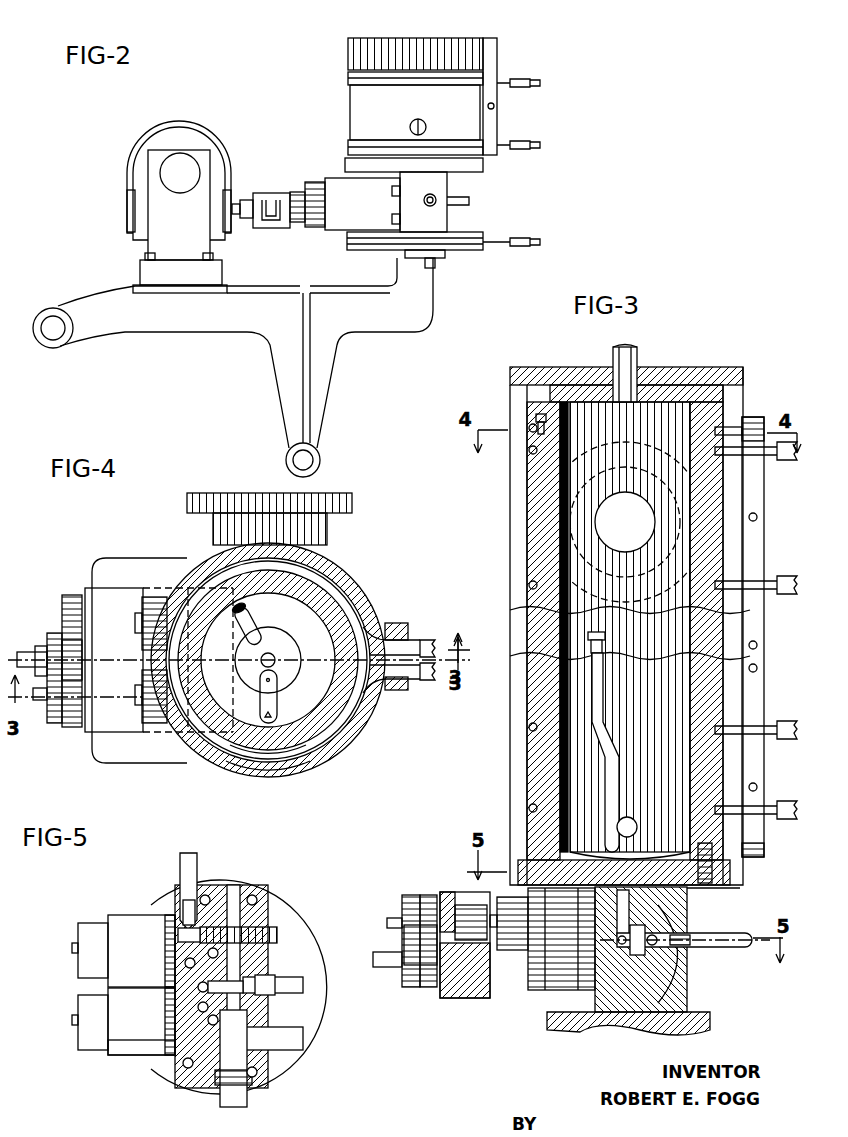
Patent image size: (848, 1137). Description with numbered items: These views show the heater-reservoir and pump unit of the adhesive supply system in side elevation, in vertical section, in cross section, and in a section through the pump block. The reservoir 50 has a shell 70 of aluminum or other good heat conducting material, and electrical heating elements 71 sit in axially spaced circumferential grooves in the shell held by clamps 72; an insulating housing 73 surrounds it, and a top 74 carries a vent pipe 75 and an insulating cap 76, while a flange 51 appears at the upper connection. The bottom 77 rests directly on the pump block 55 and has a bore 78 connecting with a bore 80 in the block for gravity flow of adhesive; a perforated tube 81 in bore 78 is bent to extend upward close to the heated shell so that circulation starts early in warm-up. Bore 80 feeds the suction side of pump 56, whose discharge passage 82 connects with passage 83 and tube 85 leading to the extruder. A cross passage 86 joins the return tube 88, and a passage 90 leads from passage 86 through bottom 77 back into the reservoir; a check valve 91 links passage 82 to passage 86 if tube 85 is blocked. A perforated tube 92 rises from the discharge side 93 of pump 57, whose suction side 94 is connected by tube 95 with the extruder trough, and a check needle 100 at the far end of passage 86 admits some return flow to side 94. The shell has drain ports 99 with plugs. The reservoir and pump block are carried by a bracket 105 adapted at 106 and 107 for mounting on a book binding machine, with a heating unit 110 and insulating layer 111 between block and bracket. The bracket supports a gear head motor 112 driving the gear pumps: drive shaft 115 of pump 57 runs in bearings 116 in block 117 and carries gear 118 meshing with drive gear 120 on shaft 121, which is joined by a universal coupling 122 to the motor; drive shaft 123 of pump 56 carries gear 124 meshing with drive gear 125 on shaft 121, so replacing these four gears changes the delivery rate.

In FIG. 2, the reservoir 50 is at (413, 98).
In FIG. 3, the reservoir 50 is at (622, 601).
In FIG. 4, the reservoir 50 is at (301, 678).
In FIG. 4, the flange 51 is at (250, 520).
In FIG. 2, the pump block 55 is at (447, 191).
In FIG. 3, the pump block 55 is at (688, 992).
In FIG. 4, the pump block 55 is at (291, 780).
In FIG. 4, the pump 56 is at (152, 597).
In FIG. 5, the pump 56 is at (123, 915).
In FIG. 3, the pump 57 is at (548, 990).
In FIG. 4, the pump 57 is at (156, 723).
In FIG. 5, the pump 57 is at (140, 1052).
In FIG. 2, the shell 70 is at (360, 119).
In FIG. 3, the shell 70 is at (528, 508).
In FIG. 4, the shell 70 is at (318, 596).
In FIG. 2, the electrical heating elements 71 is at (350, 78).
In FIG. 3, the electrical heating elements 71 is at (770, 456).
In FIG. 4, the electrical heating elements 71 is at (346, 606).
In FIG. 2, the clamps 72 is at (497, 52).
In FIG. 3, the clamps 72 is at (750, 417).
In FIG. 4, the clamps 72 is at (402, 625).
In FIG. 2, the insulating housing 73 is at (350, 44).
In FIG. 3, the insulating housing 73 is at (516, 566).
In FIG. 4, the insulating housing 73 is at (376, 712).
In FIG. 3, the top 74 is at (562, 372).
In FIG. 3, the vent pipe 75 is at (638, 356).
In FIG. 3, the insulating cap 76 is at (690, 380).
In FIG. 2, the bottom 77 is at (485, 165).
In FIG. 3, the bottom 77 is at (735, 873).
In FIG. 4, the bottom 77 is at (292, 743).
In FIG. 3, the bore 78 is at (520, 838).
In FIG. 4, the bore 78 is at (273, 646).
In FIG. 5, the bore 80 is at (175, 964).
In FIG. 3, the tube 81 is at (600, 782).
In FIG. 4, the tube 81 is at (257, 619).
In FIG. 5, the passage 82 is at (175, 936).
In FIG. 5, the passage 83 is at (186, 906).
In FIG. 5, the tube 85 is at (183, 855).
In FIG. 3, the cross passage 86 is at (640, 950).
In FIG. 5, the cross passage 86 is at (265, 960).
In FIG. 3, the tube 88 is at (735, 949).
In FIG. 5, the tube 88 is at (300, 986).
In FIG. 3, the passage 90 is at (645, 916).
In FIG. 5, the passage 90 is at (222, 989).
In FIG. 5, the check valve 91 is at (225, 885).
In FIG. 4, the perforated tube 92 is at (278, 696).
In FIG. 5, the discharge side 93 is at (175, 1031).
In FIG. 5, the suction side 94 is at (175, 1036).
In FIG. 5, the tube 95 is at (290, 1050).
In FIG. 2, the drain ports 99 is at (412, 122).
In FIG. 3, the drain ports 99 is at (624, 828).
In FIG. 5, the check needle 100 is at (232, 1052).
In FIG. 2, the bracket 105 is at (246, 323).
In FIG. 2, the mounting portion of bracket 106 is at (50, 342).
In FIG. 2, the mounting portion of bracket 107 is at (320, 461).
In FIG. 2, the heating unit 110 is at (480, 233).
In FIG. 3, the heating unit 110 is at (598, 1024).
In FIG. 5, the heating unit 110 is at (275, 912).
In FIG. 2, the insulating layer 111 is at (446, 258).
In FIG. 2, the motor 112 is at (165, 220).
In FIG. 3, the drive shaft 115 is at (458, 892).
In FIG. 3, the bearings 116 is at (458, 998).
In FIG. 3, the block 117 is at (486, 975).
In FIG. 3, the gear 118 is at (406, 896).
In FIG. 4, the gear 118 is at (50, 724).
In FIG. 3, the drive gear 120 is at (408, 990).
In FIG. 3, the shaft 121 is at (380, 953).
In FIG. 4, the shaft 121 is at (32, 652).
In FIG. 2, the universal coupling 122 is at (268, 195).
In FIG. 4, the drive shaft 123 is at (52, 634).
In FIG. 3, the gear 124 is at (412, 895).
In FIG. 4, the gear 124 is at (68, 595).
In FIG. 3, the drive gear 125 is at (426, 988).
In FIG. 4, the drive gear 125 is at (75, 728).